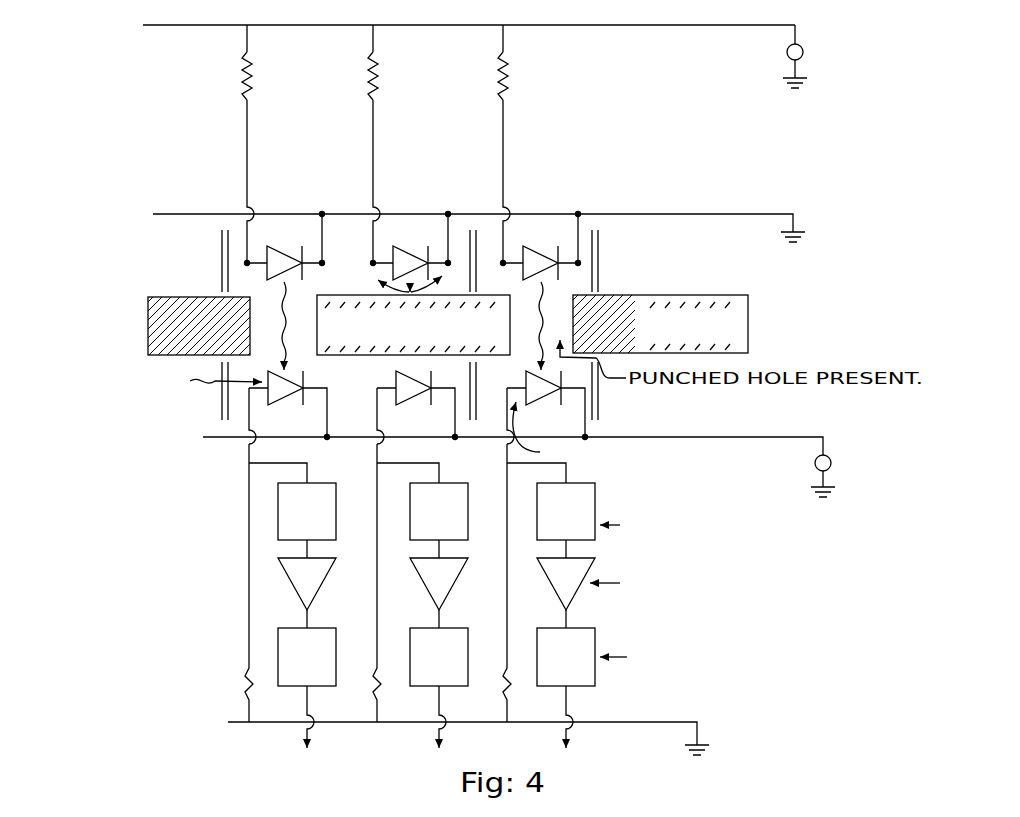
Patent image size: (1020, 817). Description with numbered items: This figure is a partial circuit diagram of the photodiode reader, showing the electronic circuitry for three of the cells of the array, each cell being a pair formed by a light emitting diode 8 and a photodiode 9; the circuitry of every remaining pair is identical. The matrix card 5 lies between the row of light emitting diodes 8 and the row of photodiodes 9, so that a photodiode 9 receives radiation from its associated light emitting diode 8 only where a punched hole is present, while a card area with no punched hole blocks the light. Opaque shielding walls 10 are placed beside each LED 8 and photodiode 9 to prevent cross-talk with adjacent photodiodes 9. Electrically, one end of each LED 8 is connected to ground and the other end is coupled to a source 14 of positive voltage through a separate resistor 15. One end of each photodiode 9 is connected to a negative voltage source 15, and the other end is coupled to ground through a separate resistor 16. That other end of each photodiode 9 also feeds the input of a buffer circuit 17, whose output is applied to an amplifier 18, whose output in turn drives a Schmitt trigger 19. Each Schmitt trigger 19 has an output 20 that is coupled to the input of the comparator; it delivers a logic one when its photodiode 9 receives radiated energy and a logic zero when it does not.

The matrix card 5 is at (692, 305).
The light emitting diode 8 is at (278, 263).
The photodiode 9 is at (270, 396).
The opaque shielding wall 10 is at (349, 223).
The source of positive voltage 14 is at (833, 45).
The resistor 15 is at (250, 74).
The resistor 16 is at (242, 690).
The buffer circuit 17 is at (297, 517).
The amplifier 18 is at (300, 577).
The Schmitt trigger 19 is at (300, 650).
The output 20 is at (444, 733).